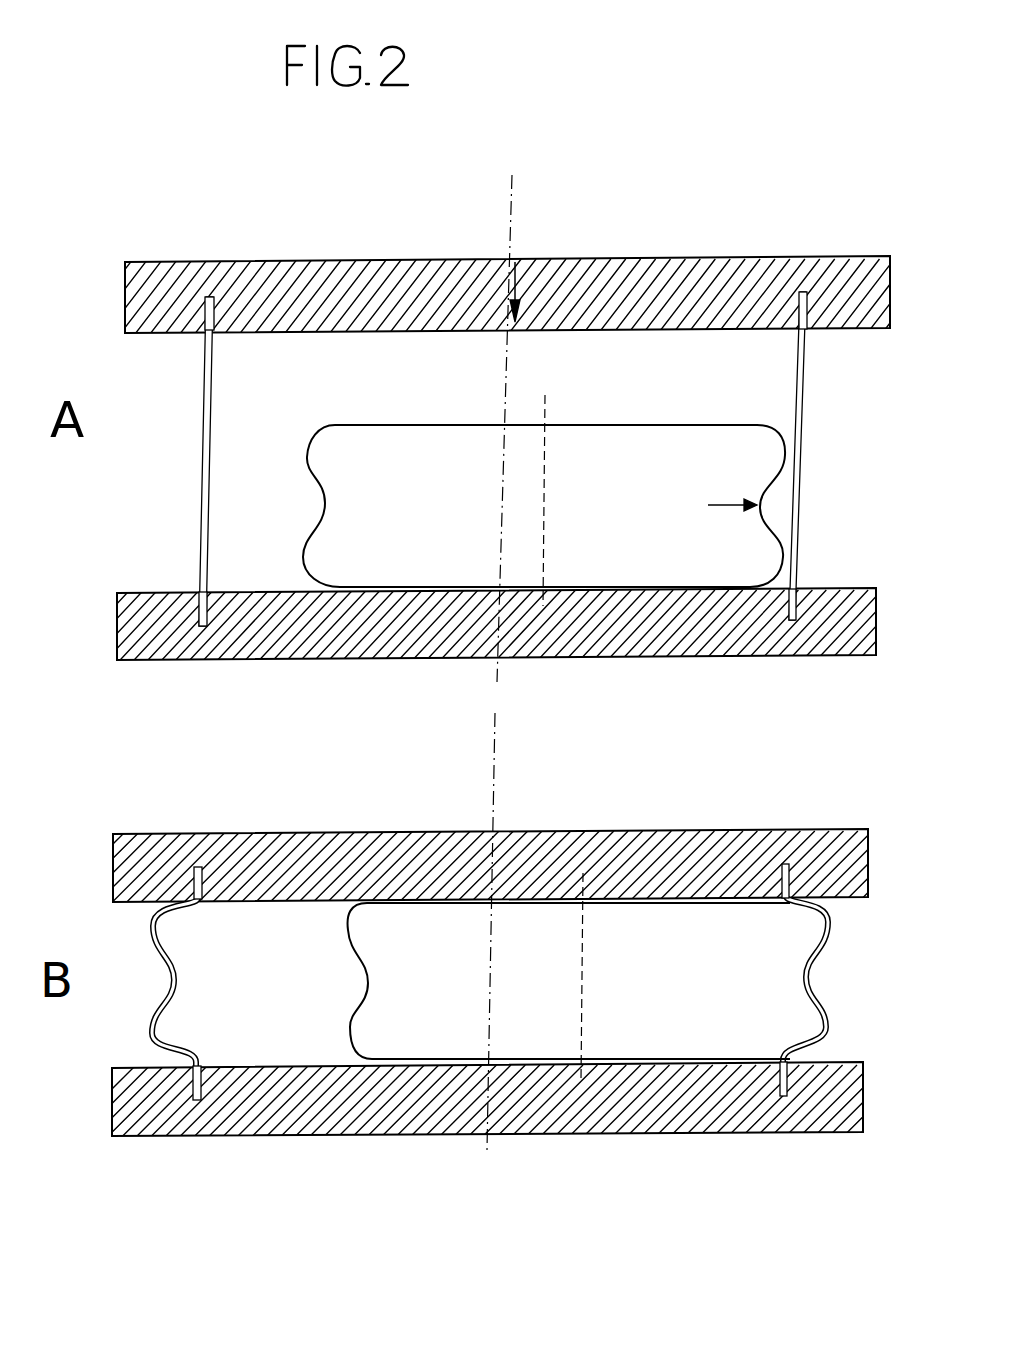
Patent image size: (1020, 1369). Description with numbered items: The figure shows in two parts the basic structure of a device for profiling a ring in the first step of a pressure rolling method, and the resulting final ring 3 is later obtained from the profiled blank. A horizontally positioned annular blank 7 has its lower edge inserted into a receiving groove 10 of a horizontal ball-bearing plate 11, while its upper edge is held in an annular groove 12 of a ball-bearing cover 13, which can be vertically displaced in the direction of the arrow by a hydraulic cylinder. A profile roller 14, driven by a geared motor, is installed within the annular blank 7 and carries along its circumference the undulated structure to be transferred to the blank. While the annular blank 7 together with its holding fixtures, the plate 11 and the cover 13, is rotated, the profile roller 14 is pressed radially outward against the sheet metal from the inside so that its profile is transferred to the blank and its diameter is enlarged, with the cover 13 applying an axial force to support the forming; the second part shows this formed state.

The ring 3 is at (165, 955).
The annular blank 7 is at (205, 433).
The receiving groove 10 is at (197, 600).
The ball-bearing plate 11 is at (665, 628).
The annular groove 12 is at (206, 330).
The ball-bearing cover 13 is at (688, 290).
The profile roller 14 is at (382, 492).